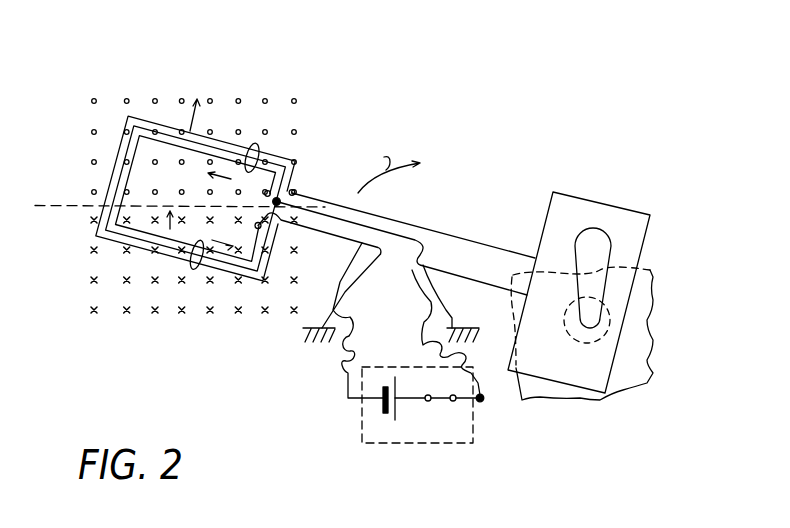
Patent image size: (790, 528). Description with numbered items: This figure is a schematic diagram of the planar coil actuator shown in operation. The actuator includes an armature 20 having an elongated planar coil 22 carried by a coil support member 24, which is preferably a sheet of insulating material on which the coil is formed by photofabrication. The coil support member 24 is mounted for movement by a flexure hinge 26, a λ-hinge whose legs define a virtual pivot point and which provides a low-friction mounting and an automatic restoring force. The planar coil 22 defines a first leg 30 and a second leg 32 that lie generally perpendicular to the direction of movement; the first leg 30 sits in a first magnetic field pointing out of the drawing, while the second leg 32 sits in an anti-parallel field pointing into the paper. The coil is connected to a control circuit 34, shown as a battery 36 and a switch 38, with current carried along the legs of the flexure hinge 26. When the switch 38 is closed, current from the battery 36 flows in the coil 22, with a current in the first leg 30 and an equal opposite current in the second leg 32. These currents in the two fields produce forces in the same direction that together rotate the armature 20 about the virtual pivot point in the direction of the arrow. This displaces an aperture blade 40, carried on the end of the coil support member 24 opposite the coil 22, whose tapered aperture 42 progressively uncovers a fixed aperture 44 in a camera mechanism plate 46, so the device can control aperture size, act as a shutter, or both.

The armature 20 is at (315, 181).
The planar coil 22 is at (126, 181).
The coil support member 24 is at (127, 117).
The flexure hinge 26 is at (412, 290).
The first leg 30 is at (254, 152).
The second leg 32 is at (197, 267).
The control circuit 34 is at (455, 436).
The battery 36 is at (388, 417).
The switch 38 is at (440, 403).
The aperture blade 40 is at (578, 198).
The tapered aperture 42 is at (613, 254).
The fixed aperture 44 is at (609, 322).
The camera mechanism plate 46 is at (633, 372).